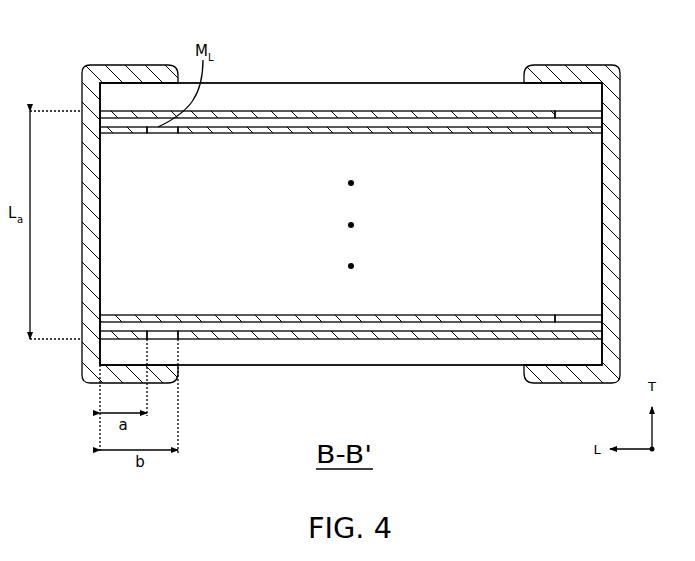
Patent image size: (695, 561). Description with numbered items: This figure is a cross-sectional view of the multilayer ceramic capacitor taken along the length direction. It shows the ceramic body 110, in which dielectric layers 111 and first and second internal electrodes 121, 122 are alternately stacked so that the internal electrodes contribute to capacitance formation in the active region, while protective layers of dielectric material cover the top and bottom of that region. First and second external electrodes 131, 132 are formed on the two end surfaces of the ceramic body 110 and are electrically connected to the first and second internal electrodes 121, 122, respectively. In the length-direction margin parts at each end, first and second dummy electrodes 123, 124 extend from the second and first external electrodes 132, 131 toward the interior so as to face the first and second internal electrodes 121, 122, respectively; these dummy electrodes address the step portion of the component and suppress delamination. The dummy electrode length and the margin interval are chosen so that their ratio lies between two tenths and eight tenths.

The ceramic body 110 is at (450, 82).
The dielectric layer 111 is at (602, 123).
The first internal electrode 121 is at (118, 108).
The second internal electrode 122 is at (602, 137).
The first dummy electrode 123 is at (582, 108).
The second dummy electrode 124 is at (112, 133).
The first external electrode 131 is at (128, 70).
The second external electrode 132 is at (578, 75).